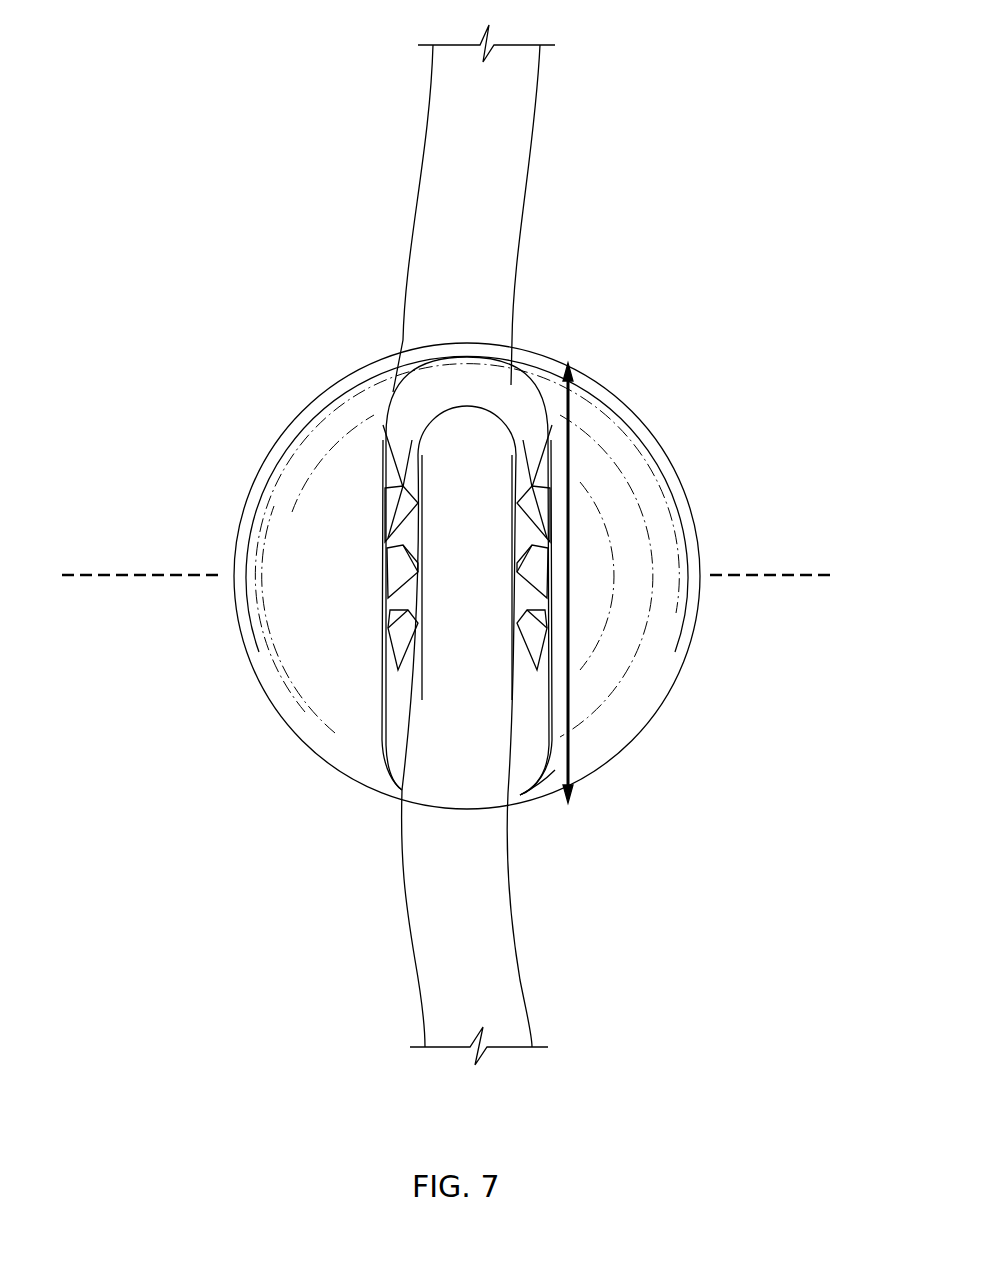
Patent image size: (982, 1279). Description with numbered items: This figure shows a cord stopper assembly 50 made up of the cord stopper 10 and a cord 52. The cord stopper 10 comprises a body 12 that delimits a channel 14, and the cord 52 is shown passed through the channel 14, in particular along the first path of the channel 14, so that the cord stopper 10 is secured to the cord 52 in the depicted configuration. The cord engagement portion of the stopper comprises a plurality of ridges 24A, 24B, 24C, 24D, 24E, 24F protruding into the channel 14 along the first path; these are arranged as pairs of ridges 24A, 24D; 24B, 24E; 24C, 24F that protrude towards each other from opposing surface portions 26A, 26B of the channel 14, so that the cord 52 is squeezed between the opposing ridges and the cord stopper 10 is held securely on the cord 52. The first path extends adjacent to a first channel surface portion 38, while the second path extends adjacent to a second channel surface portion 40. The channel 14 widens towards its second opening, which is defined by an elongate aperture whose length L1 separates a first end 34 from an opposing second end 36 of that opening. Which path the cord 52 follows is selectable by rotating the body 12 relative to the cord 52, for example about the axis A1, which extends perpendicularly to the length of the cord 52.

The cord stopper assembly 50 is at (143, 170).
The cord stopper 10 is at (227, 457).
The body 12 is at (317, 703).
The channel 14 is at (408, 452).
The cord 52 is at (500, 185).
The first end 34 is at (508, 793).
The second end 36 is at (465, 345).
The second channel surface portion 40 is at (423, 392).
The first channel surface portion 38 is at (527, 740).
The opposing surface portion 26A is at (390, 617).
The opposing surface portion 26B is at (543, 620).
The ridge 24A is at (395, 513).
The ridge 24B is at (397, 577).
The ridge 24C is at (397, 653).
The ridge 24D is at (533, 512).
The ridge 24E is at (533, 580).
The ridge 24F is at (537, 653).
The length L1 is at (570, 455).
The axis A1 is at (768, 565).